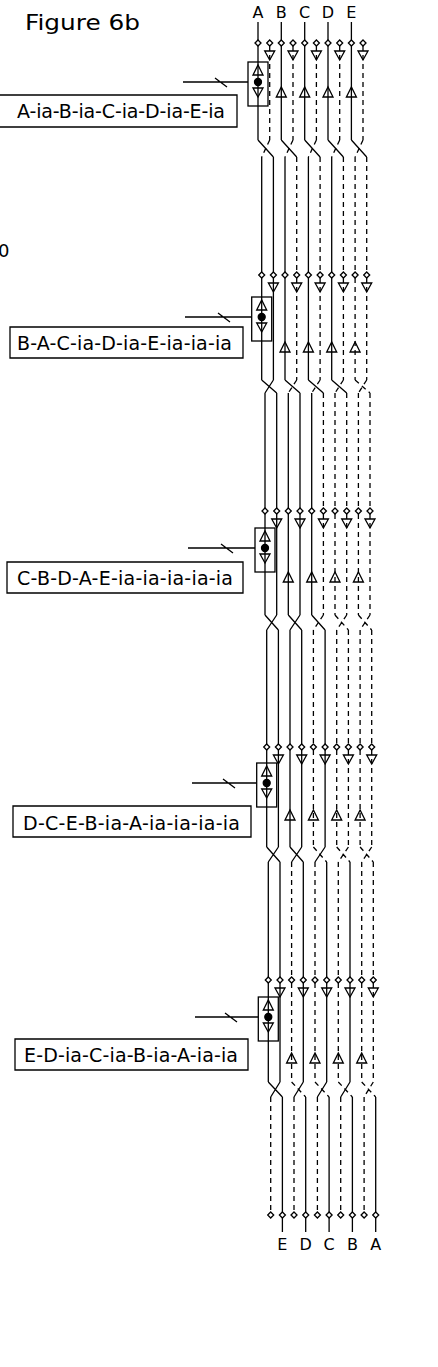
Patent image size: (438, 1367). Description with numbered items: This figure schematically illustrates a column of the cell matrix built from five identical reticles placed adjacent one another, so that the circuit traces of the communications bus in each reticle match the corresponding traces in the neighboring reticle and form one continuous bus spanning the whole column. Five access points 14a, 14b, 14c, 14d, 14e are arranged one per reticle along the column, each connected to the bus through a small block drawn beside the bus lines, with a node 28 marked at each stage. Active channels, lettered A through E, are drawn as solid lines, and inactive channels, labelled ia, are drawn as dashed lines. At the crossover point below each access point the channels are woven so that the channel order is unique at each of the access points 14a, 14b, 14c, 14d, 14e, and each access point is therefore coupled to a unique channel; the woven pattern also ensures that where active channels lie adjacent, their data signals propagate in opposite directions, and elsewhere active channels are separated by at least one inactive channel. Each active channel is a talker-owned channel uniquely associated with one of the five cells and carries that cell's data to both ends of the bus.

The interconnect node 28 is at (255, 43).
The access point 14a is at (248, 69).
The access point 14b is at (252, 304).
The access point 14c is at (255, 535).
The access point 14d is at (257, 770).
The access point 14e is at (258, 1004).